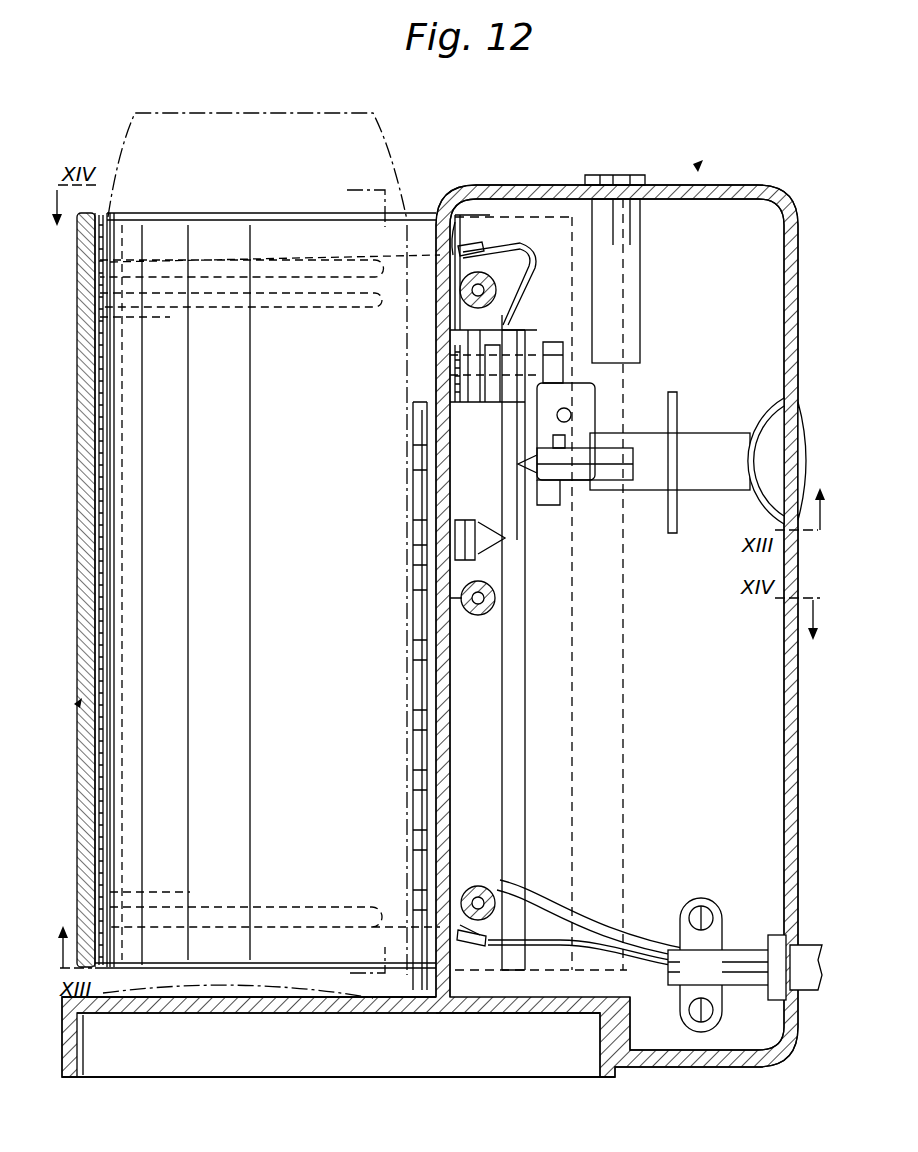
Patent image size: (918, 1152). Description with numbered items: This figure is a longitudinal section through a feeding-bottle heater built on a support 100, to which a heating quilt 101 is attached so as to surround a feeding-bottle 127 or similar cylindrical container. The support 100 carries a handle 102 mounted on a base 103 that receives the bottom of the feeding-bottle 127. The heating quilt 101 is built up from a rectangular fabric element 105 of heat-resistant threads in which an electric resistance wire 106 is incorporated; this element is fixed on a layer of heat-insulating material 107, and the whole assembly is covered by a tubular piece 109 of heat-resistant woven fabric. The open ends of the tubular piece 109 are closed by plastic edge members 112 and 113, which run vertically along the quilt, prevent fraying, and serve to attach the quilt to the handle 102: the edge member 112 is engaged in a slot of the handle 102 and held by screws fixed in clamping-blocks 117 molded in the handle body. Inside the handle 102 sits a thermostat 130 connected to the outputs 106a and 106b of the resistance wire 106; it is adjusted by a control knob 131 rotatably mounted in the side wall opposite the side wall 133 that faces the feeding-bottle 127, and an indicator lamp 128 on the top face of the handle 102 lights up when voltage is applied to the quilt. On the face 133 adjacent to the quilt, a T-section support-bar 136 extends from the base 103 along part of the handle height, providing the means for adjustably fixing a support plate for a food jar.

The support 100 is at (698, 168).
The heating quilt 101 is at (78, 702).
The handle 102 is at (787, 703).
The base 103 is at (108, 1017).
The fabric element 105 is at (98, 803).
The electric resistance wire 106 is at (305, 310).
The resistance wire output 106a is at (447, 196).
The resistance wire output 106b is at (452, 1016).
The heat-insulating material layer 107 is at (98, 757).
The tubular piece of woven fabric 109 is at (101, 522).
The edge member 112 is at (492, 748).
The edge member 113 is at (612, 728).
The clamping-block 117 is at (505, 260).
The feeding-bottle 127 is at (243, 140).
The indicator lamp 128 is at (605, 176).
The thermostat 130 is at (528, 330).
The control knob 131 is at (797, 420).
The side wall 133 is at (437, 368).
The T-section support-bar 136 is at (420, 748).